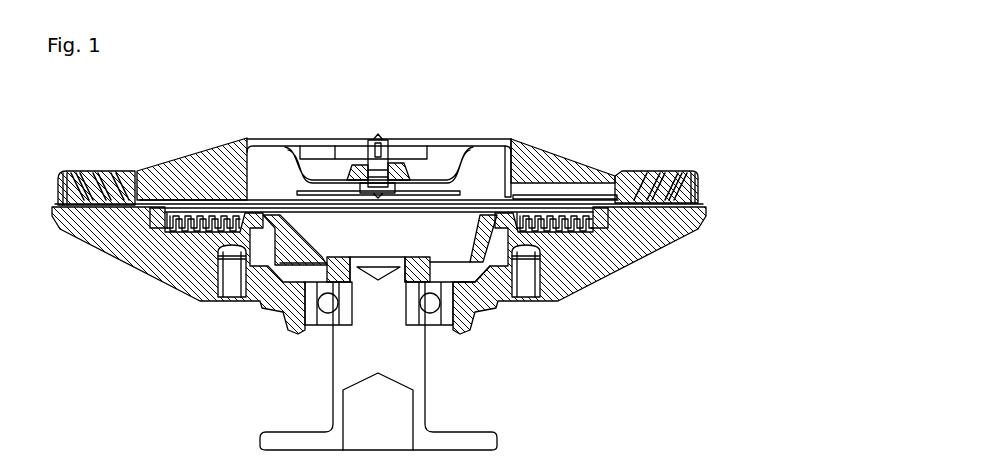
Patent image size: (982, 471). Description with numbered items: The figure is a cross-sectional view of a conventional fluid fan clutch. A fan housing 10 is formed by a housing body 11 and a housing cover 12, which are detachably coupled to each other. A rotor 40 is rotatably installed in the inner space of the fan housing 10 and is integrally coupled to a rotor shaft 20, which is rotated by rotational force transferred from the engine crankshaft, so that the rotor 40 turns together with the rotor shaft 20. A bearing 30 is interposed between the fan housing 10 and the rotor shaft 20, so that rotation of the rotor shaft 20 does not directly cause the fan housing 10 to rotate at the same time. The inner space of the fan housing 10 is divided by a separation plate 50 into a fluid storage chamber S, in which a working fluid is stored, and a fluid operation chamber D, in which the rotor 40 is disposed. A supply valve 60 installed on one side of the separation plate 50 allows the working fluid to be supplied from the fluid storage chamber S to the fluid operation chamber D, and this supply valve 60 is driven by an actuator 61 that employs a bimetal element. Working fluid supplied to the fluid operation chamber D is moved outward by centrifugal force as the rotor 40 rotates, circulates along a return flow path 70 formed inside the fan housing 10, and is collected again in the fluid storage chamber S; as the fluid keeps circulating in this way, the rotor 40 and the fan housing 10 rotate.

The fan housing 10 is at (436, 232).
The housing body 11 is at (416, 267).
The housing cover 12 is at (592, 165).
The rotor shaft 20 is at (418, 360).
The bearing 30 is at (313, 320).
The rotor 40 is at (257, 292).
The separation plate 50 is at (573, 289).
The supply valve 60 is at (437, 185).
The actuator 61 is at (346, 150).
The return flow path 70 is at (560, 172).
The fluid storage chamber S is at (502, 158).
The fluid operation chamber D is at (498, 293).